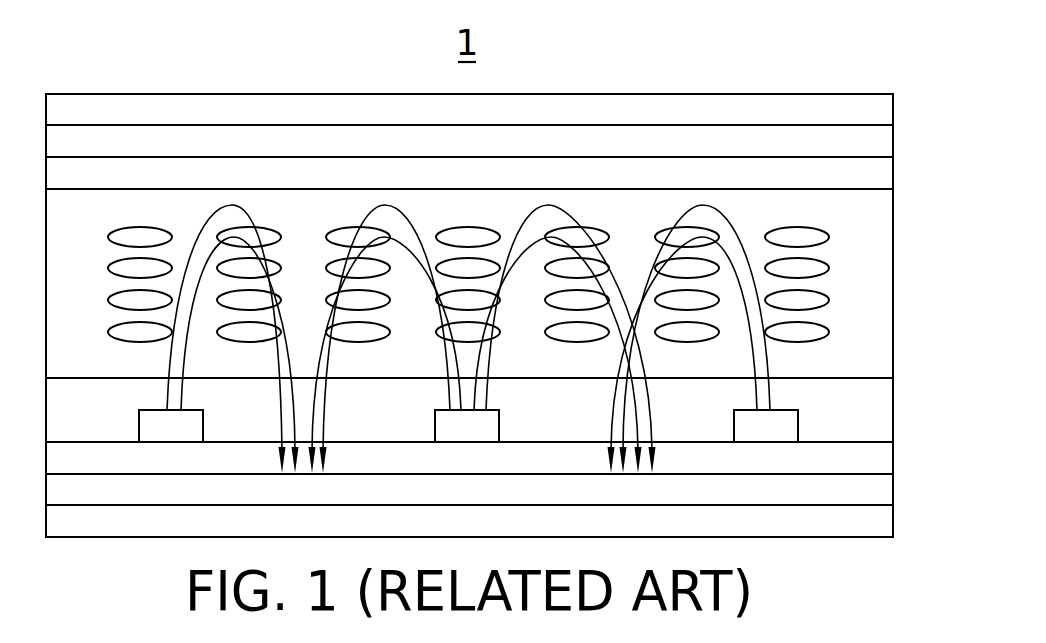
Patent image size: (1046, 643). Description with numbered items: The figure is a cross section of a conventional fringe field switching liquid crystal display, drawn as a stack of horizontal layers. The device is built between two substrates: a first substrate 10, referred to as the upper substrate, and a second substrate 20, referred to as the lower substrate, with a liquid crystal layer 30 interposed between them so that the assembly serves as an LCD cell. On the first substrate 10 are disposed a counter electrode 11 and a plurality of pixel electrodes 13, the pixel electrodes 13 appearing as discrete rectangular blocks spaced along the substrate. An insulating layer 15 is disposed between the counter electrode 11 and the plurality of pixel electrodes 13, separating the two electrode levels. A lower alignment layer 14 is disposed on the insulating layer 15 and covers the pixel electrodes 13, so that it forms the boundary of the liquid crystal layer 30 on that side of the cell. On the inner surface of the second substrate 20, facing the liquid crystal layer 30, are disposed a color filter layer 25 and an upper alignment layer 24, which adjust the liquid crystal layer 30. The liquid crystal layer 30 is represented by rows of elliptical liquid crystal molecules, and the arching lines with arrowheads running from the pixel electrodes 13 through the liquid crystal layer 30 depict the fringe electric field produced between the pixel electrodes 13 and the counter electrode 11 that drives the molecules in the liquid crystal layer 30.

The first substrate 10 is at (875, 522).
The counter electrode 11 is at (875, 490).
The pixel electrodes 13 is at (778, 425).
The lower alignment layer 14 is at (875, 393).
The insulating layer 15 is at (875, 457).
The second substrate 20 is at (875, 108).
The upper alignment layer 24 is at (875, 172).
The color filter layer 25 is at (875, 140).
The liquid crystal layer 30 is at (850, 283).